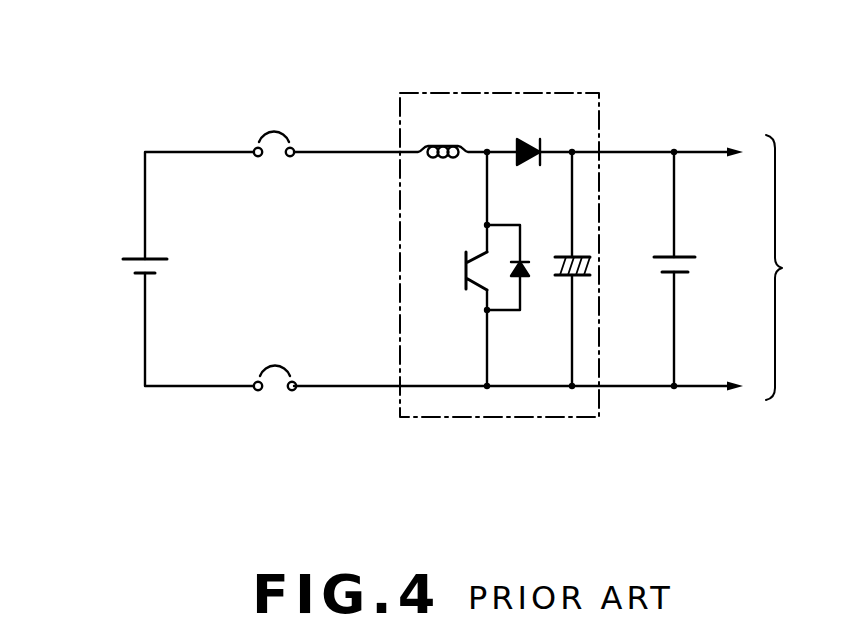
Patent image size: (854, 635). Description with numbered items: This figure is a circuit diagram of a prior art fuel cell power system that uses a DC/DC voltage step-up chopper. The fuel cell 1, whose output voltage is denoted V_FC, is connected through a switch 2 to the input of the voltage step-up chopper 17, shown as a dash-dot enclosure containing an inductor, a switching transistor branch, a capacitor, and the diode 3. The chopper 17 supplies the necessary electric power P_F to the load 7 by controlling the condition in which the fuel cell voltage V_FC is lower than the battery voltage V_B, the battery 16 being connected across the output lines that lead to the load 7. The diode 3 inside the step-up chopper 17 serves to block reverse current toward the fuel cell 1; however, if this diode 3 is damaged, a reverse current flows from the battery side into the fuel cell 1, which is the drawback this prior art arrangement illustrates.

The fuel cell 1 is at (158, 264).
The switch 2 is at (273, 131).
The diode 3 is at (530, 141).
The load 7 is at (783, 267).
The battery 16 is at (686, 266).
The voltage step-up chopper 17 is at (499, 216).